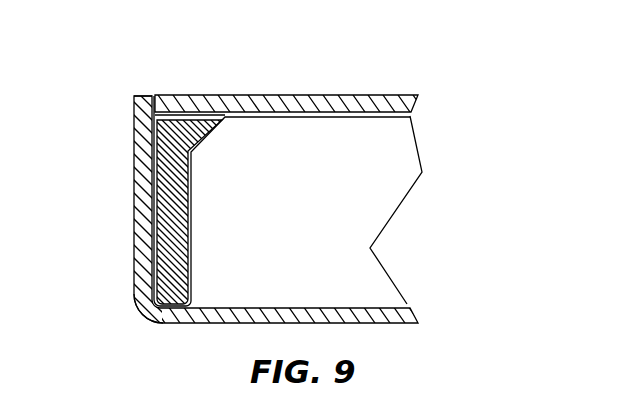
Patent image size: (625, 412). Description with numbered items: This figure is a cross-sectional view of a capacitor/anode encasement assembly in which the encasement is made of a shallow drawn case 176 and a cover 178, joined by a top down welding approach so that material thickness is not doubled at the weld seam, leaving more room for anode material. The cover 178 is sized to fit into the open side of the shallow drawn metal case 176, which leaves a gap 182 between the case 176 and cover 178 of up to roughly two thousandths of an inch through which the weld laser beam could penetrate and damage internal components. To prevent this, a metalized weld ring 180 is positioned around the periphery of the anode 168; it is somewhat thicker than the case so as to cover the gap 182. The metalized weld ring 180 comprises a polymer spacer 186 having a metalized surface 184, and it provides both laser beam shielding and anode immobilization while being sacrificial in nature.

The anode 168 is at (328, 190).
The shallow drawn case 176 is at (143, 203).
The cover 178 is at (312, 100).
The metalized weld ring 180 is at (178, 307).
The gap 182 is at (153, 96).
The metalized surface 184 is at (137, 104).
The polymer spacer 186 is at (150, 313).